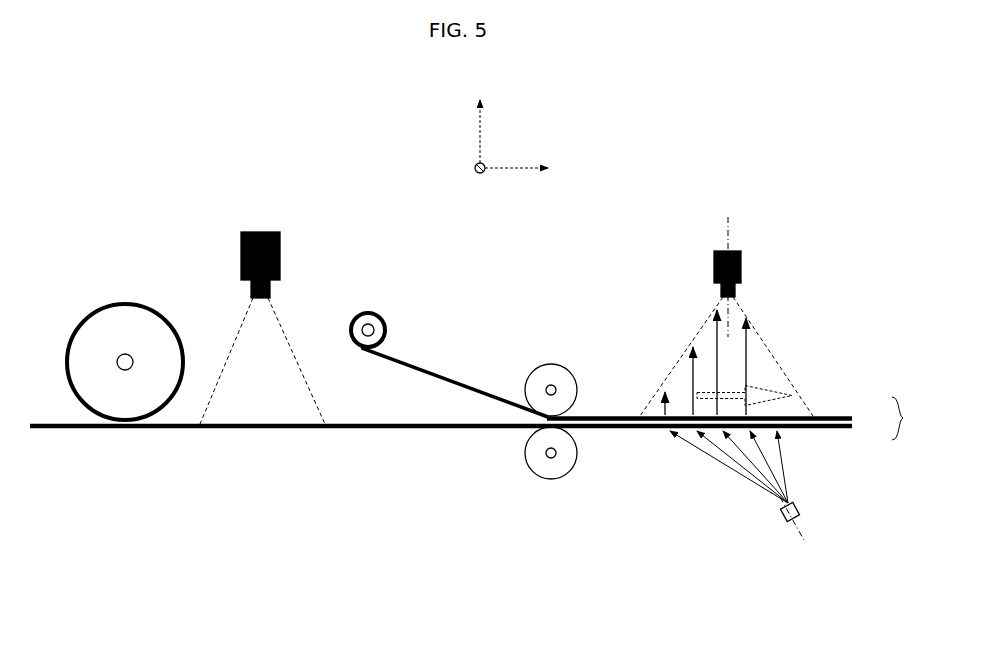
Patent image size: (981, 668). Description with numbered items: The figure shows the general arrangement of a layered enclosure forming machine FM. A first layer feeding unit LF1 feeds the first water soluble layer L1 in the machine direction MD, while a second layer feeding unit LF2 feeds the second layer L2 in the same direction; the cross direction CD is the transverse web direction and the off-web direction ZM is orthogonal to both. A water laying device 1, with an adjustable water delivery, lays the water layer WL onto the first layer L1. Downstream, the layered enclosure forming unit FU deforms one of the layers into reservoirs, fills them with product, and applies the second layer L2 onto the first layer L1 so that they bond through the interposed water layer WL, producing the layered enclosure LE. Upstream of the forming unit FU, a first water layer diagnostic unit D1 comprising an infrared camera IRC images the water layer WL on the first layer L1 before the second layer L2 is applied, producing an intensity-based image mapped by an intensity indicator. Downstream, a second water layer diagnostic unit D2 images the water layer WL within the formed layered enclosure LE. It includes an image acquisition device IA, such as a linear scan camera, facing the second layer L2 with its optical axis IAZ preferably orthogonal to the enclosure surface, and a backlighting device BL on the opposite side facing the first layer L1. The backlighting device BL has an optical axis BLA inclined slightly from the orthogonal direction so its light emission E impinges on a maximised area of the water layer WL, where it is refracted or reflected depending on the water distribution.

The water laying device 1 is at (137, 298).
The first layer L1 is at (50, 423).
The first layer feeding unit LF1 is at (75, 432).
The infrared camera IRC is at (256, 232).
The first water layer diagnostic unit D1 is at (303, 220).
The second layer feeding unit LF2 is at (370, 303).
The second layer L2 is at (446, 378).
The layered enclosure forming unit FU is at (504, 471).
The layered enclosure forming machine FM is at (561, 321).
The water layer WL is at (380, 421).
The off-web direction ZM is at (501, 127).
The machine direction MD is at (760, 389).
The cross direction CD is at (475, 166).
The image acquisition device IA is at (742, 262).
The optical axis of the image acquisition device IAZ is at (728, 228).
The second water layer diagnostic unit D2 is at (749, 247).
The light emission E is at (784, 457).
The backlighting device BL is at (800, 507).
The optical axis of the backlighting device BLA is at (784, 528).
The layered enclosure LE is at (912, 418).